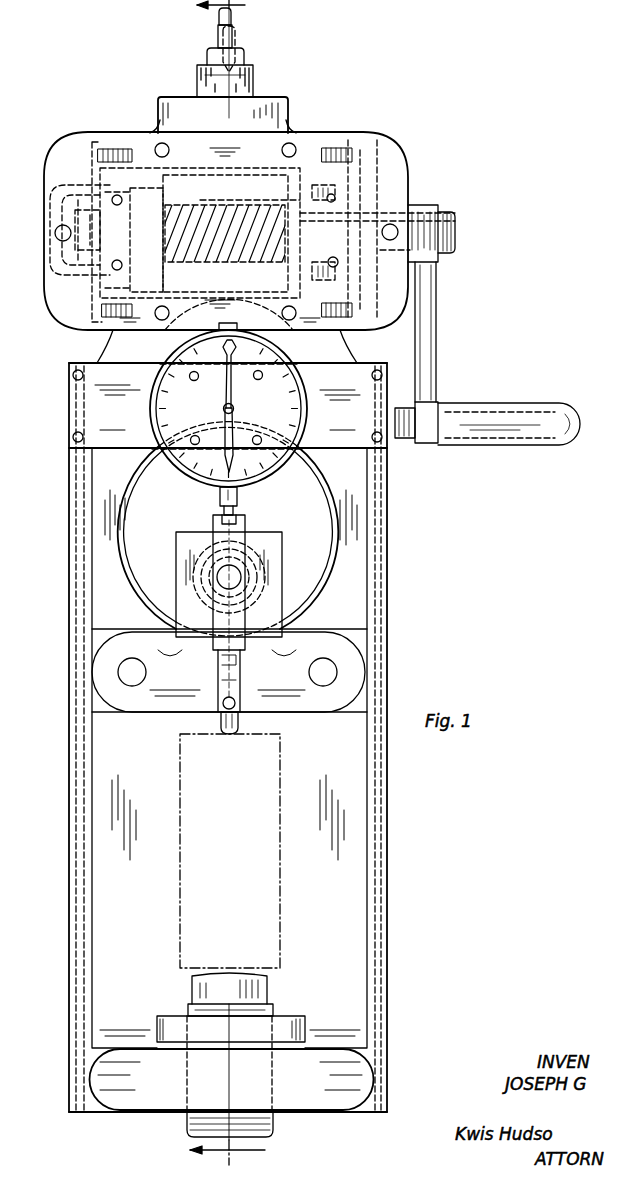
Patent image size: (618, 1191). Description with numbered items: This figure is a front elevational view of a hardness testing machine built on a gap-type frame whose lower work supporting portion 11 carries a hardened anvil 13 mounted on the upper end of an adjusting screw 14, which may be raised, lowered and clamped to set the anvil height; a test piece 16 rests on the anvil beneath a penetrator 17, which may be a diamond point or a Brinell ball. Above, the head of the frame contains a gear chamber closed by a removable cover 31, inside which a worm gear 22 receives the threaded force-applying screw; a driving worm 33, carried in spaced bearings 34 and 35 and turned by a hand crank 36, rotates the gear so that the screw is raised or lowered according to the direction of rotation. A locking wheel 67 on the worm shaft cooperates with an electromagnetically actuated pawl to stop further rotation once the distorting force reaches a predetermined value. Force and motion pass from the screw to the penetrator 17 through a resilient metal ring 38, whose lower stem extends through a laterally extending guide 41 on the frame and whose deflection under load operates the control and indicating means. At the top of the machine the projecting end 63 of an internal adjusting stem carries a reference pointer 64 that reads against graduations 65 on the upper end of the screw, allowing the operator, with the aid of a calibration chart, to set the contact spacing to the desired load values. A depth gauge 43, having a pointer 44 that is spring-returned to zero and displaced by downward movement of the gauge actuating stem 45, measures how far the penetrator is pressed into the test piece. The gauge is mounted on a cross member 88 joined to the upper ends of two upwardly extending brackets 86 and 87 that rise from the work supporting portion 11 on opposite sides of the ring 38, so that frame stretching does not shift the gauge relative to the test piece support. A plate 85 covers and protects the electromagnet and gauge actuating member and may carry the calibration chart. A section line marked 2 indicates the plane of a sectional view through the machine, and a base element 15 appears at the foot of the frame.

The section line 2- 2 is at (212, 582).
The projecting end of the stem 63 is at (234, 15).
The reference pointer 64 is at (222, 42).
The graduations 65 is at (254, 70).
The removable cover 31 is at (373, 145).
The bearing 34 is at (78, 178).
The worm gear 22 is at (178, 193).
The driving worm 33 is at (243, 198).
The bearing 35 is at (365, 182).
The locking wheel 67 is at (378, 328).
The hand crank 36 is at (436, 347).
The gauge 43 is at (270, 383).
The pointer 44 is at (225, 435).
The gauge actuating stem 45 is at (240, 492).
The cross member 88 is at (345, 448).
The bracket 86 is at (76, 518).
The bracket 87 is at (380, 540).
The resilient metal ring 38 is at (305, 592).
The guide 41 is at (285, 683).
The penetrator 17 is at (218, 720).
The plate 85 is at (240, 700).
The test piece 16 is at (195, 775).
The anvil 13 is at (195, 985).
The adjusting screw 14 is at (262, 995).
The base plate 15 is at (300, 1015).
The work supporting portion 11 is at (360, 1078).